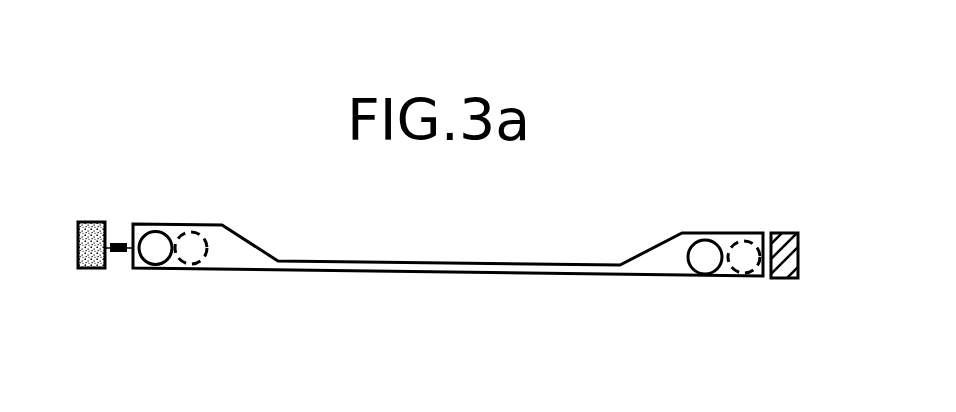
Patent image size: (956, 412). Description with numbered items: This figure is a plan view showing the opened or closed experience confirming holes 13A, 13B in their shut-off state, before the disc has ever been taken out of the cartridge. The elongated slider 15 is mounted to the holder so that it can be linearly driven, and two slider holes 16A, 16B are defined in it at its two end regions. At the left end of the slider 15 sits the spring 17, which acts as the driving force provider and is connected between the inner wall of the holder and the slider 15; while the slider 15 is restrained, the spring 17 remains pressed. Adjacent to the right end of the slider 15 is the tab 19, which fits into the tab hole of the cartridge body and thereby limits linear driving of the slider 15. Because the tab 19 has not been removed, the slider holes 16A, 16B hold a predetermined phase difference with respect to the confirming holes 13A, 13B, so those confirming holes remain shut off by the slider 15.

The slider 15 is at (665, 260).
The slider hole 16A is at (707, 258).
The slider hole 16B is at (157, 245).
The opened or closed experience confirming hole 13A is at (760, 263).
The opened or closed experience confirming hole 13B is at (208, 245).
The spring 17 is at (110, 250).
The tab 19 is at (788, 263).